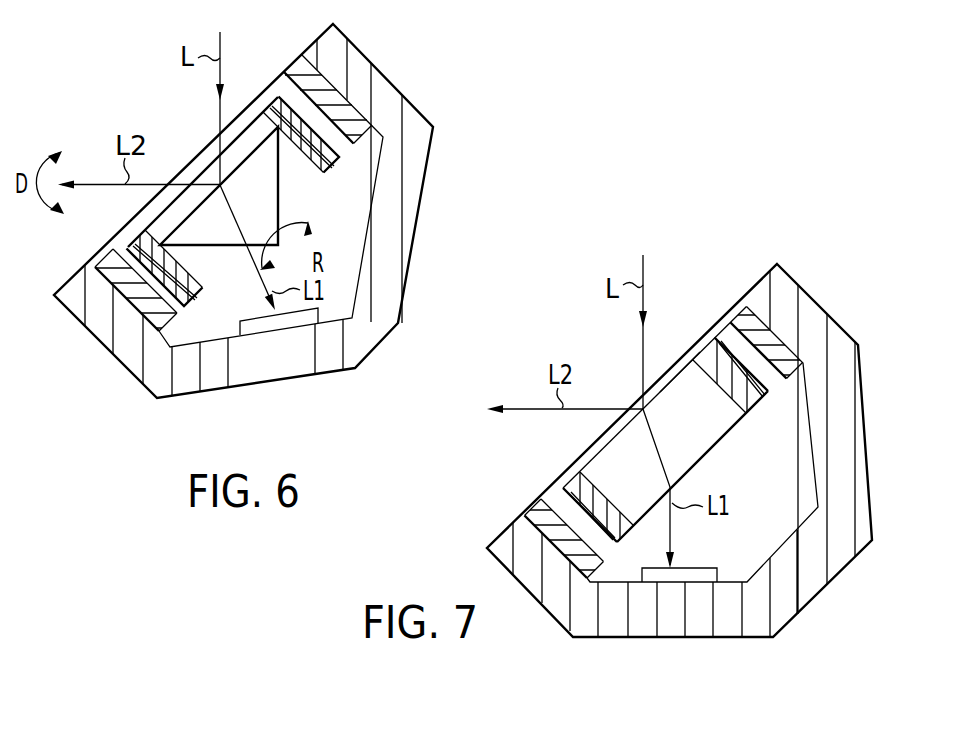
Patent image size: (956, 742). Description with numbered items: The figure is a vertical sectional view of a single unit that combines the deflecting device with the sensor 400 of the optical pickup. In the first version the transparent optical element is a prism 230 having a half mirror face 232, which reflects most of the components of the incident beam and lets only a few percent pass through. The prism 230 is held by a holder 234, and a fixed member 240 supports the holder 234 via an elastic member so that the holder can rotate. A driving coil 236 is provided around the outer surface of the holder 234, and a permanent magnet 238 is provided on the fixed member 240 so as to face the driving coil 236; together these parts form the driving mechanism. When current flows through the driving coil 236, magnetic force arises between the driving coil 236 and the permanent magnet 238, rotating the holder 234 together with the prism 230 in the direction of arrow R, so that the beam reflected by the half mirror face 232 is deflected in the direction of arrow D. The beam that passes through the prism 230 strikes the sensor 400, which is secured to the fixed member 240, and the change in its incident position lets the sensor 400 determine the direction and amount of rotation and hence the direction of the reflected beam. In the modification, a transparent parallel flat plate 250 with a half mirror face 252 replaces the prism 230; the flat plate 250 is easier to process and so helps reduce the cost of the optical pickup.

In FIG. 6, the optical element 230 is at (268, 197).
In FIG. 6, the half mirror face 232 is at (177, 225).
In FIG. 6, the holder 234 is at (198, 277).
In FIG. 7, the holder 234 is at (578, 470).
In FIG. 6, the driving coil 236 is at (185, 303).
In FIG. 7, the driving coil 236 is at (562, 484).
In FIG. 6, the permanent magnet 238 is at (305, 83).
In FIG. 7, the permanent magnet 238 is at (745, 322).
In FIG. 6, the fixed member 240 is at (413, 168).
In FIG. 7, the fixed member 240 is at (677, 625).
In FIG. 7, the parallel flat plate 250 is at (712, 428).
In FIG. 7, the half mirror face 252 is at (677, 372).
In FIG. 6, the sensor 400 is at (272, 335).
In FIG. 7, the sensor 400 is at (720, 567).